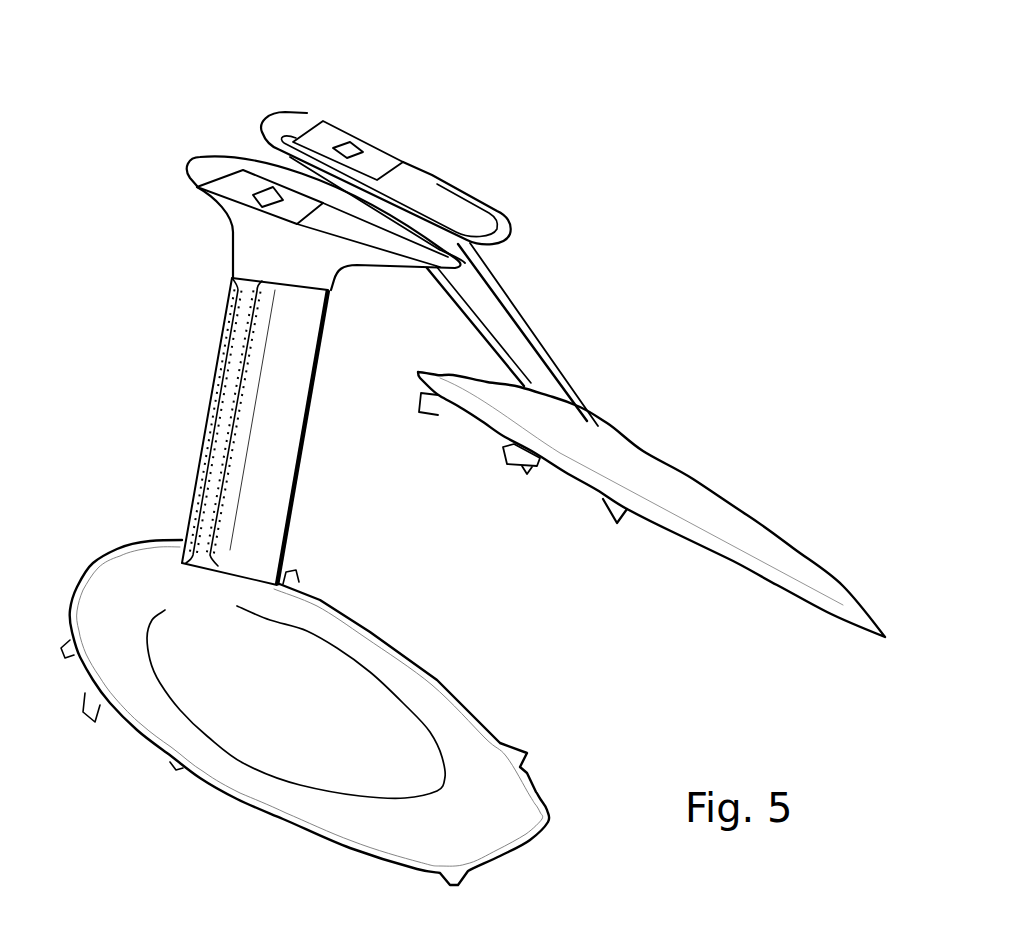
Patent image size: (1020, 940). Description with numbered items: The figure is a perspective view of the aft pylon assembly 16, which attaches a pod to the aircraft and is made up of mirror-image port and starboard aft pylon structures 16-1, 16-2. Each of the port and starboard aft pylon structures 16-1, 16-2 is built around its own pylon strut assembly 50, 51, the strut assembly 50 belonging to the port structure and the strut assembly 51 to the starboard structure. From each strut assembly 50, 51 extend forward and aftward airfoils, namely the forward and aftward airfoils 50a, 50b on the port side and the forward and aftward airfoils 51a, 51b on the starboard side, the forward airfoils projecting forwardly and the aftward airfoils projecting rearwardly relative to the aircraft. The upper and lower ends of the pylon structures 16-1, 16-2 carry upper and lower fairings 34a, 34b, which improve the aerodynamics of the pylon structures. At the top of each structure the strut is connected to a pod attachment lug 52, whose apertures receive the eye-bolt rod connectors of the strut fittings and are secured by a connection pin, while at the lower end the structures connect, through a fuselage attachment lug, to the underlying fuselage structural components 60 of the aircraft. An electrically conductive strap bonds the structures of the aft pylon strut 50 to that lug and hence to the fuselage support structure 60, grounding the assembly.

The aft pylon assembly 16 is at (600, 83).
The port aft pylon structure 16-1 is at (176, 460).
The starboard aft pylon structure 16-2 is at (547, 337).
The upper fairing 34a is at (247, 254).
The lower fairing 34b is at (693, 498).
The pylon strut assembly 50 is at (237, 357).
The forward airfoil 50a is at (196, 508).
The aftward airfoil 50b is at (263, 505).
The pylon strut assembly 51 is at (510, 345).
The forward airfoil 51a is at (455, 308).
The aftward airfoil 51b is at (567, 375).
The pod attachment lug 52 is at (231, 186).
The fuselage structural components 60 is at (536, 460).